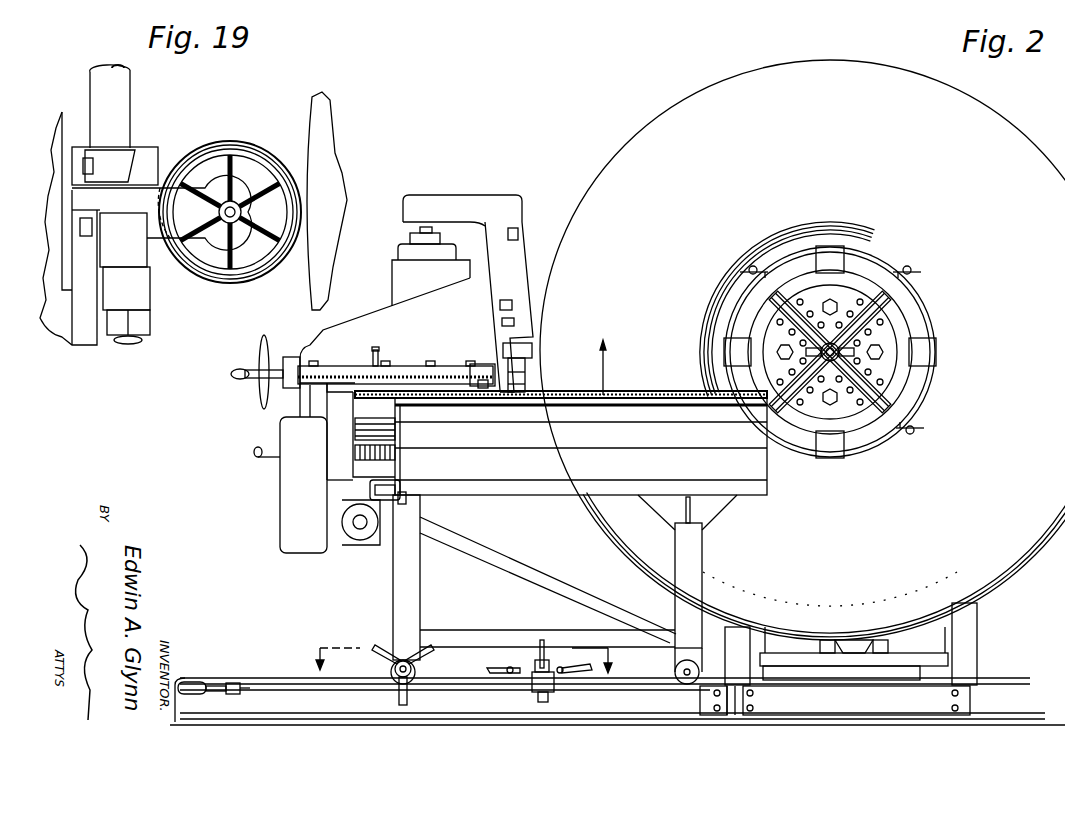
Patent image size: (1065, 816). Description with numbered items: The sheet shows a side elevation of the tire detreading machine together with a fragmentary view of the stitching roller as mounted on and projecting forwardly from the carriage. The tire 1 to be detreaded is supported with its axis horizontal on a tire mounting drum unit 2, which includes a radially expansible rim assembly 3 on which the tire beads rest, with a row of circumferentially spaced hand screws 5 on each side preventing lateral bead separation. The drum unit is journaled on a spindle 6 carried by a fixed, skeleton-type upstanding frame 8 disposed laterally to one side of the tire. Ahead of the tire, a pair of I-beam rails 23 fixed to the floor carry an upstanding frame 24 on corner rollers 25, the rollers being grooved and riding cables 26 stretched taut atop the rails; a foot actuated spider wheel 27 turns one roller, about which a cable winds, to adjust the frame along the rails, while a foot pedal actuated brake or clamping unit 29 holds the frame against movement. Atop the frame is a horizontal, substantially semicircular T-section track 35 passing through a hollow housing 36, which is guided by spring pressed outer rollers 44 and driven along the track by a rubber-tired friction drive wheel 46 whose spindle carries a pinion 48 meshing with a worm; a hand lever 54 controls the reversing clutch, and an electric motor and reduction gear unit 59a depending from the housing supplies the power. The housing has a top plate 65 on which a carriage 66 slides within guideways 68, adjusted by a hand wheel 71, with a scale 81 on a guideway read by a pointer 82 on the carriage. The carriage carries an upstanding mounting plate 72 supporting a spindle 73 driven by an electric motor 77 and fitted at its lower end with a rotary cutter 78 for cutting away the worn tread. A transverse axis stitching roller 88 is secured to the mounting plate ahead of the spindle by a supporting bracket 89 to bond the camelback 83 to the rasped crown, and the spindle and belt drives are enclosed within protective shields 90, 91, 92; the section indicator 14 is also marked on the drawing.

In FIG. 19, the tire 1 is at (330, 226).
In FIG. 2, the tire 1 is at (972, 112).
In FIG. 2, the tire mounting drum unit 2 is at (897, 321).
In FIG. 2, the rim assembly 3 is at (923, 325).
In FIG. 2, the hand screws 5 is at (748, 270).
In FIG. 2, the spindle 6 is at (835, 345).
In FIG. 2, the upstanding frame 8 is at (975, 636).
In FIG. 2, the section line 14 is at (466, 662).
In FIG. 2, the rails 23 is at (467, 693).
In FIG. 2, the upstanding frame 24 is at (408, 590).
In FIG. 2, the corner rollers 25 is at (397, 682).
In FIG. 2, the cables 26 is at (240, 678).
In FIG. 2, the spider wheel 27 is at (383, 648).
In FIG. 2, the brake or clamping unit 29 is at (515, 666).
In FIG. 2, the track 35 is at (525, 463).
In FIG. 2, the housing 36 is at (330, 445).
In FIG. 2, the outer rollers 44 is at (400, 492).
In FIG. 2, the friction drive wheel 46 is at (397, 432).
In FIG. 2, the pinion 48 is at (397, 452).
In FIG. 2, the hand lever 54 is at (255, 460).
In FIG. 2, the electric motor and reduction gear unit 59a is at (350, 541).
In FIG. 2, the top plate 65 is at (397, 391).
In FIG. 2, the carriage 66 is at (353, 333).
In FIG. 2, the guideways 68 is at (332, 368).
In FIG. 2, the hand wheel 71 is at (259, 392).
In FIG. 19, the mounting plate 72 is at (63, 218).
In FIG. 19, the spindle 73 is at (117, 101).
In FIG. 2, the electric motor 77 is at (407, 273).
In FIG. 2, the rotary cutter 78 is at (538, 343).
In FIG. 2, the scale 81 is at (440, 380).
In FIG. 2, the pointer 82 is at (378, 352).
In FIG. 19, the camelback 83 is at (312, 118).
In FIG. 19, the stitching roller 88 is at (181, 157).
In FIG. 19, the supporting bracket 89 is at (142, 238).
In FIG. 2, the protective housing or shield 90 is at (513, 285).
In FIG. 2, the protective housing or shield 91 is at (457, 210).
In FIG. 2, the protective housing or shield 92 is at (285, 475).